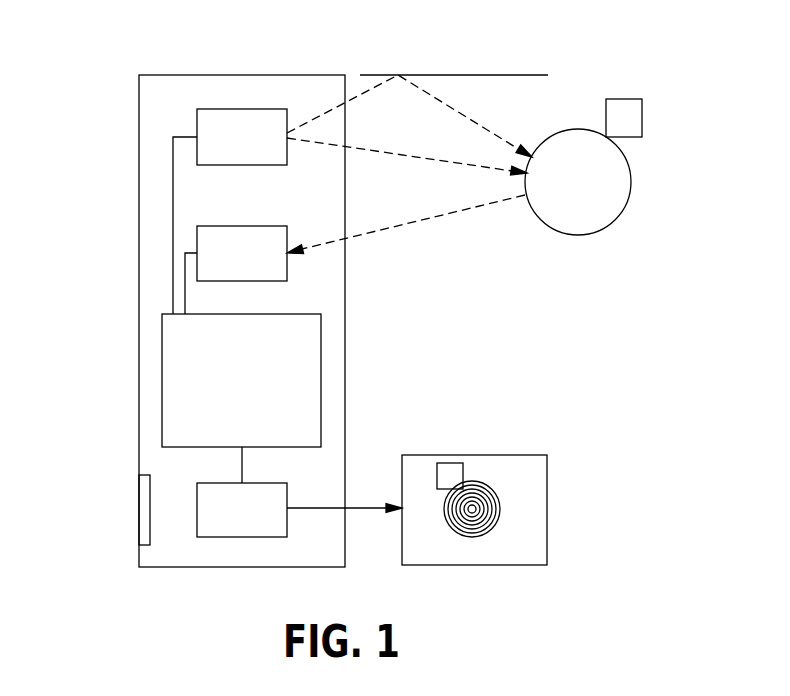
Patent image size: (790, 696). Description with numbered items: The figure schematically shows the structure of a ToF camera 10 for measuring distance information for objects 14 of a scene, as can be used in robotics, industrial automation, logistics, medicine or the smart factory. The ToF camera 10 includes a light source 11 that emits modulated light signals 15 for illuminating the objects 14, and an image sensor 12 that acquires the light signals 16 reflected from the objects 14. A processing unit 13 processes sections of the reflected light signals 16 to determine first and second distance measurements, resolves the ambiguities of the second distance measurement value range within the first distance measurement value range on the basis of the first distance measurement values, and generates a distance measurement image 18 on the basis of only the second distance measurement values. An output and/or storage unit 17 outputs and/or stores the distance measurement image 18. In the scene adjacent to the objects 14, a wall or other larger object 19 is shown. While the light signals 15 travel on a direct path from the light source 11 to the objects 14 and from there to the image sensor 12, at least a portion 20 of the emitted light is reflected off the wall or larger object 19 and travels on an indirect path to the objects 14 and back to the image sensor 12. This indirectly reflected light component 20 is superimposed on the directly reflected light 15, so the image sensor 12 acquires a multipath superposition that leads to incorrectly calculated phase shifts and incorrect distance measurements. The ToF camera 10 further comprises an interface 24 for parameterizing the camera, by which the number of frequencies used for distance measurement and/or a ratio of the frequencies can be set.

The ToF camera 10 is at (330, 107).
The light source 11 is at (257, 151).
The image sensor 12 is at (258, 268).
The processing unit 13 is at (309, 348).
The objects 14 is at (637, 221).
The modulated light signals 15 is at (417, 158).
The reflected light signals 16 is at (397, 225).
The output and/or storage unit 17 is at (279, 510).
The distance measurement image 18 is at (547, 478).
The wall or other larger object 19 is at (509, 75).
The portion of the modulated light signals reflected on an indirect path 20 is at (457, 108).
The interface 24 is at (143, 518).